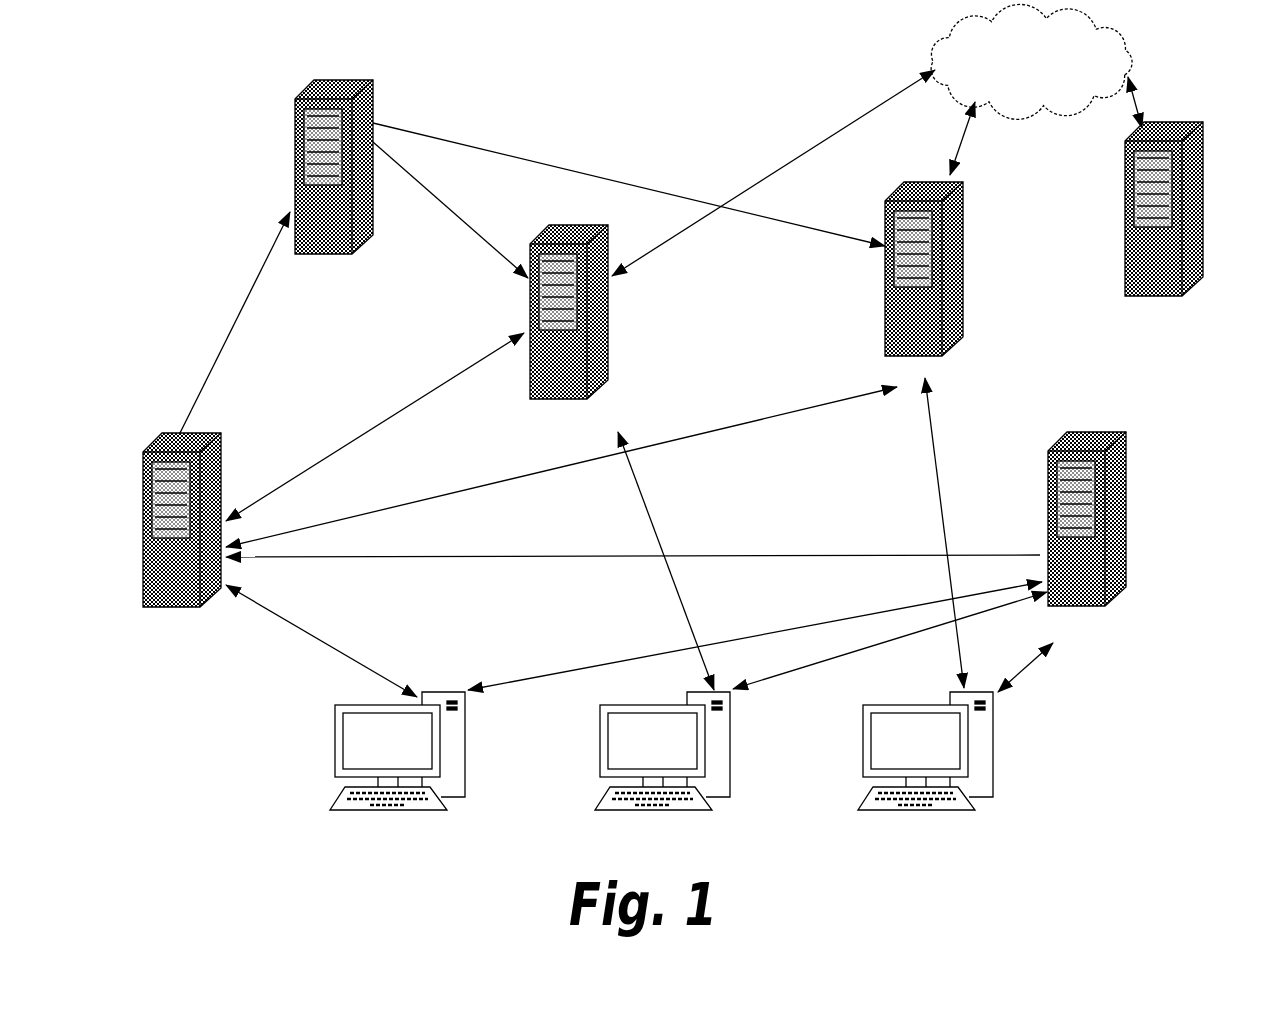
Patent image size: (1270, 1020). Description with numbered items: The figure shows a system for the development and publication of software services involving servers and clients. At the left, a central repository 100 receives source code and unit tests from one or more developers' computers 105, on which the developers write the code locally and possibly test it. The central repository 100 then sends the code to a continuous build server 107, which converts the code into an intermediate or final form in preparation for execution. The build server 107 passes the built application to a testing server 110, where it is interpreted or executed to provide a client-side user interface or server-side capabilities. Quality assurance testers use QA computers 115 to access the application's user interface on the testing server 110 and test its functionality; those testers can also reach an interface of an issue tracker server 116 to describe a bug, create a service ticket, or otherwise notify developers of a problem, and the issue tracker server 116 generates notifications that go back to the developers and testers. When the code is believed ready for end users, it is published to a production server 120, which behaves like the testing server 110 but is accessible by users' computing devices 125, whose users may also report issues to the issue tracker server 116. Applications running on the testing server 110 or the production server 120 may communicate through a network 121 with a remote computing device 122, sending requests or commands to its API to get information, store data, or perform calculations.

The central repository 100 is at (173, 549).
The developers' computers 105 is at (397, 771).
The continuous build server 107 is at (325, 195).
The testing server 110 is at (559, 326).
The QA computers 115 is at (662, 771).
The issue tracker server 116 is at (1078, 535).
The production server 120 is at (915, 282).
The network 121 is at (1031, 61).
The remote computing device 122 is at (1155, 223).
The users' computing devices 125 is at (925, 771).